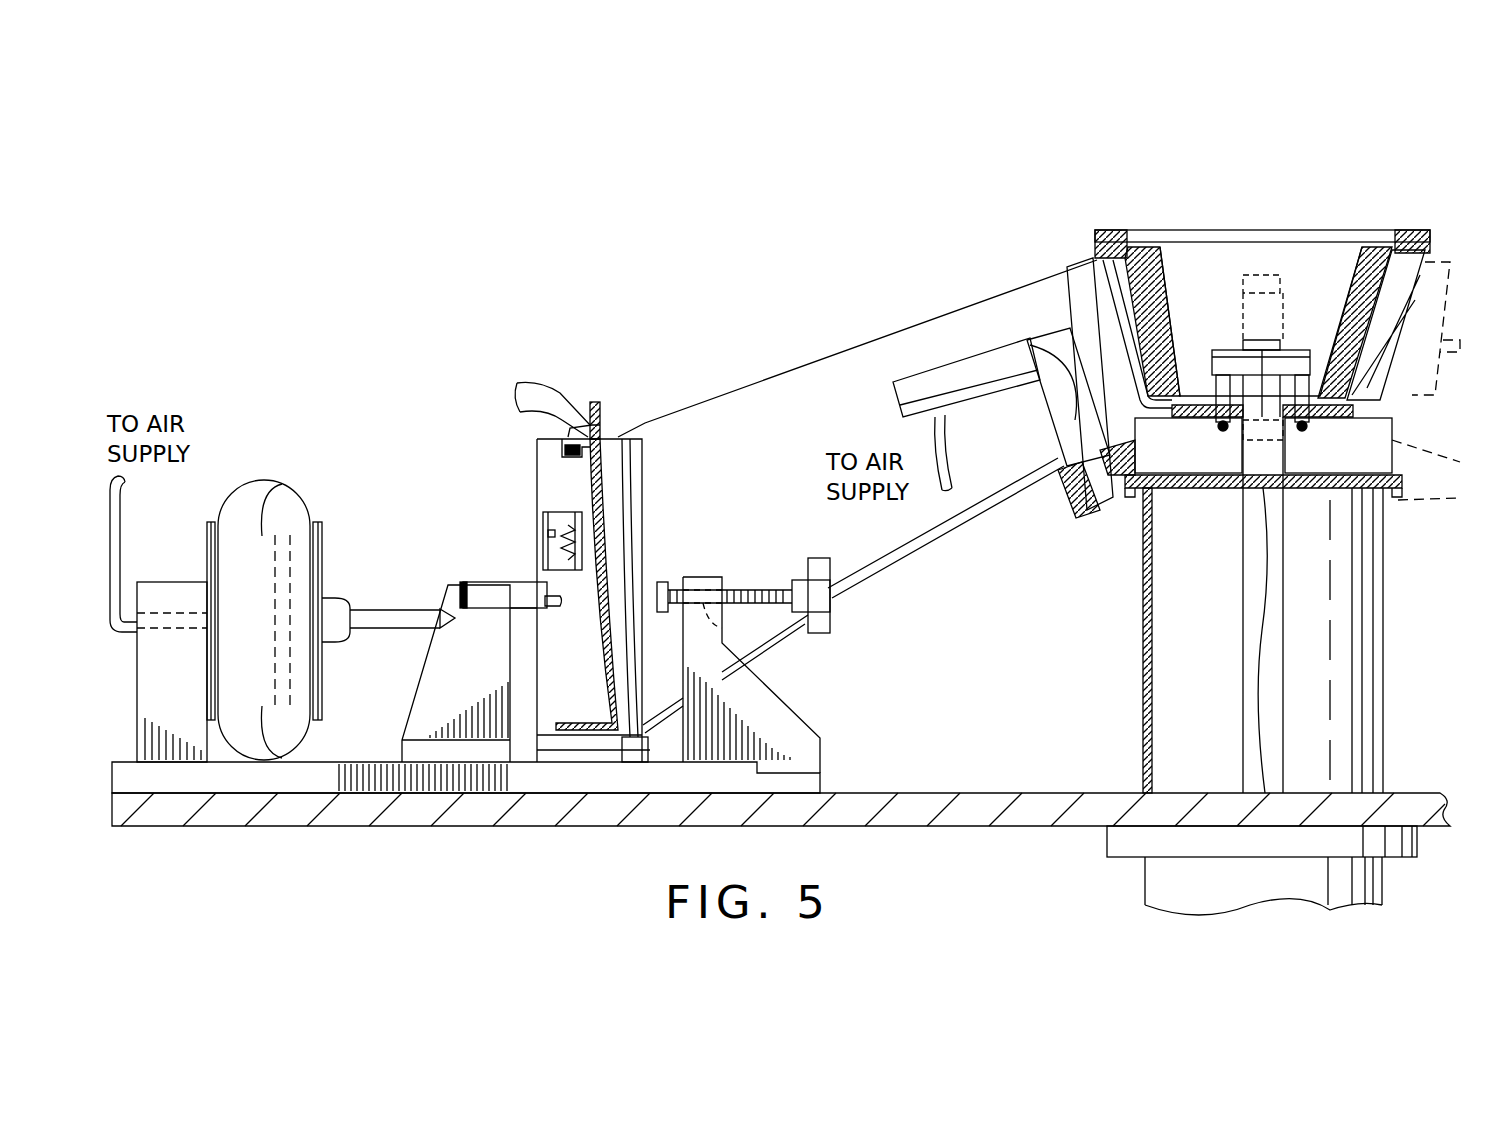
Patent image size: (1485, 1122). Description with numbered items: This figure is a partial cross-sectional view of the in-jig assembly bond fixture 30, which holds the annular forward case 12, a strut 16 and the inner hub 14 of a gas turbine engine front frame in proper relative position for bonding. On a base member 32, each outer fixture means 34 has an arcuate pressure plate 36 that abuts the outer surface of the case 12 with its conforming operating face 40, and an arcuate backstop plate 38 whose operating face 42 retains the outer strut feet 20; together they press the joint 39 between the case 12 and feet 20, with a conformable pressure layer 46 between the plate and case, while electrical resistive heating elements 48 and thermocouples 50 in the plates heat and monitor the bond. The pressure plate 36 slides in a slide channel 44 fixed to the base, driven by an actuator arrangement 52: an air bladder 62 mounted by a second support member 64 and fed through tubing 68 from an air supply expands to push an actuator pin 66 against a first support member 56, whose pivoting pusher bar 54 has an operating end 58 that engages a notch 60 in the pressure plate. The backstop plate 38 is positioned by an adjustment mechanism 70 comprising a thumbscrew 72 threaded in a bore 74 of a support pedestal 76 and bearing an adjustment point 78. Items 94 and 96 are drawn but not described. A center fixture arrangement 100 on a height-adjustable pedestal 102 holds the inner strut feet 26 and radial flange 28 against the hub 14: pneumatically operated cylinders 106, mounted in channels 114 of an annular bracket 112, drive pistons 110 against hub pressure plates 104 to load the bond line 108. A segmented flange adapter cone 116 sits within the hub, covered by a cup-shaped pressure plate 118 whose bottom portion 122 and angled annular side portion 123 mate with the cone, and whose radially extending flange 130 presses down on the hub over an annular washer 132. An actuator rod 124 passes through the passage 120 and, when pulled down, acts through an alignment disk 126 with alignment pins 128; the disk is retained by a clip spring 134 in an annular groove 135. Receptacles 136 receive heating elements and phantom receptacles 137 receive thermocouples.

The annular forward case 12 is at (582, 490).
The inner hub 14 is at (1082, 322).
The strut 16 is at (790, 443).
The outer strut feet 20 is at (610, 500).
The inner strut feet 26 is at (1097, 260).
The radial flange 28 is at (1150, 432).
The in-jig assembly bond fixture 30 is at (785, 175).
The base member 32 is at (953, 826).
The outer fixture means 34 is at (385, 390).
The pressure plate 36 is at (590, 683).
The backstop plate 38 is at (643, 465).
The joint 39 is at (625, 752).
The operating face 40 is at (625, 523).
The operating face 42 is at (573, 455).
The slide channel 44 is at (665, 778).
The pressure layer 46 is at (575, 515).
The electrical resistive heating elements 48 is at (565, 548).
The thermocouples 50 is at (548, 533).
The actuator arrangement 52 is at (388, 484).
The pusher bar 54 is at (470, 582).
The first support member 56 is at (465, 693).
The operating end 58 is at (548, 604).
The notch 60 is at (520, 625).
The air bladder 62 is at (275, 480).
The second support member 64 is at (190, 580).
The actuator pin 66 is at (430, 630).
The tubing 68 is at (122, 513).
The adjustment mechanism 70 is at (838, 612).
The thumbscrew 72 is at (768, 588).
The bore 74 is at (726, 623).
The support pedestal 76 is at (758, 710).
The adjustment point 78 is at (665, 582).
The hose 94 is at (572, 400).
The tab 96 is at (603, 440).
The center fixture arrangement 100 is at (1276, 162).
The pedestal 102 is at (1143, 670).
The hub pressure plate 104 is at (1060, 297).
The pneumatically operated cylinder 106 is at (893, 382).
The bond line 108 is at (1067, 272).
The piston 110 is at (1062, 420).
The annular bracket 112 is at (1058, 505).
The channels 114 is at (1113, 512).
The segmented flange adapter cone 116 is at (1140, 305).
The cup-shaped pressure plate 118 is at (1175, 272).
The passage 120 is at (1283, 458).
The bottom portion 122 is at (1296, 365).
The annular side portion 123 is at (1360, 262).
The actuator rod 124 is at (1247, 572).
The alignment disk 126 is at (1216, 358).
The alignment pins 128 is at (1325, 417).
The radially extending flange 130 is at (1106, 262).
The annular washer 132 is at (1128, 240).
The clip spring 134 is at (1280, 318).
The annular groove 135 is at (1286, 290).
The receptacles 136 is at (1142, 252).
The receptacles 137 is at (1400, 240).